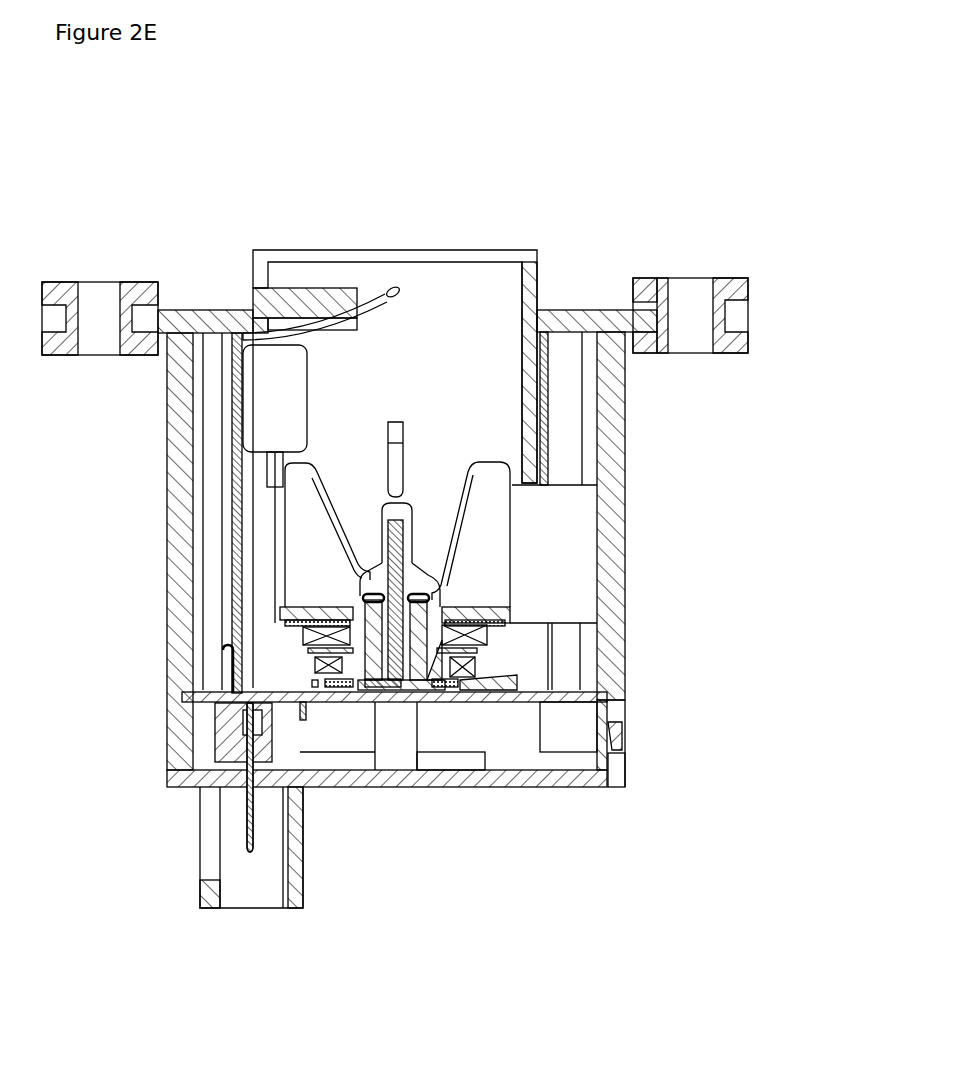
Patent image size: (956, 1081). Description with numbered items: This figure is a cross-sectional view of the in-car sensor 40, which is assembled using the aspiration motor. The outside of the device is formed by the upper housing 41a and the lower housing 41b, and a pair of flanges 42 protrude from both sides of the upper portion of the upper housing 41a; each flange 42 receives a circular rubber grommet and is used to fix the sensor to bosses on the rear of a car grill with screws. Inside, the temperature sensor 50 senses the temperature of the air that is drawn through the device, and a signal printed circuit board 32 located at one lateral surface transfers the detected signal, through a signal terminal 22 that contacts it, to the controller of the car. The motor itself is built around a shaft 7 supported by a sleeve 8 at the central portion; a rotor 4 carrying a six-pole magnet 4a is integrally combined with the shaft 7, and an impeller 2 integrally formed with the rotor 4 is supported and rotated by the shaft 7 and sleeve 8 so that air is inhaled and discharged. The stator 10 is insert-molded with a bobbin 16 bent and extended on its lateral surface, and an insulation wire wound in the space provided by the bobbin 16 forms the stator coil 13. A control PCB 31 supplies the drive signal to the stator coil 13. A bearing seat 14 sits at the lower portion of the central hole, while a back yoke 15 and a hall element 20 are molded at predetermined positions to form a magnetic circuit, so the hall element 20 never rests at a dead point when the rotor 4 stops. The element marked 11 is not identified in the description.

The impeller 2 is at (495, 517).
The rotor 4 is at (522, 607).
The 6-pole magnet 4a is at (488, 634).
The shaft 7 is at (406, 550).
The sleeve 8 is at (283, 628).
The stator 10 is at (499, 652).
The capacitor block 11 is at (273, 450).
The stator coil 13 is at (489, 668).
The bearing seat 14 is at (370, 703).
The back yoke 15 is at (440, 703).
The bobbin 16 is at (400, 703).
The hall element 20 is at (324, 788).
The signal terminal 22 is at (247, 830).
The control PCB 31 is at (607, 700).
The signal printed circuit board 32 is at (233, 542).
The in-car sensor 40 is at (566, 215).
The upper housing 41a is at (608, 583).
The lower housing 41b is at (613, 713).
The flange 42 is at (728, 282).
The temperature sensor 50 is at (395, 289).